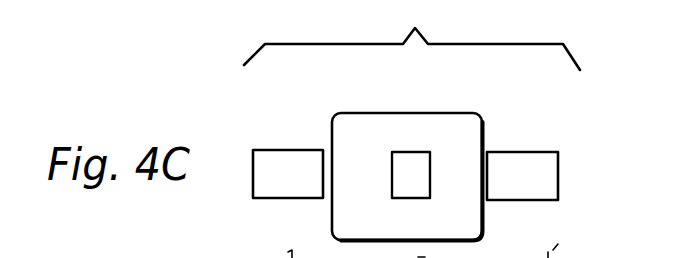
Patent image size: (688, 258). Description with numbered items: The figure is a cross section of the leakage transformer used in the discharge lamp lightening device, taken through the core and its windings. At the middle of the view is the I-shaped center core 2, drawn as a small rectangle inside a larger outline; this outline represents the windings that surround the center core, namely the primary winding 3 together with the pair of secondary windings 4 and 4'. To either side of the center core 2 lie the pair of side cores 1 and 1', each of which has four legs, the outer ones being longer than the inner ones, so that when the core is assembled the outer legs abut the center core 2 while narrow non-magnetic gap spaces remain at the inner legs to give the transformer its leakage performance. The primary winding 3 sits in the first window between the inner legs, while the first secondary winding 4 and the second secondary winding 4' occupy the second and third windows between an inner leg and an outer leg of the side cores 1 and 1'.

The side core 1 is at (288, 150).
The side core 1' is at (529, 151).
The center core 2 is at (409, 162).
The primary winding 3 is at (436, 148).
The first secondary winding 4 is at (407, 177).
The second secondary winding 4' is at (407, 177).